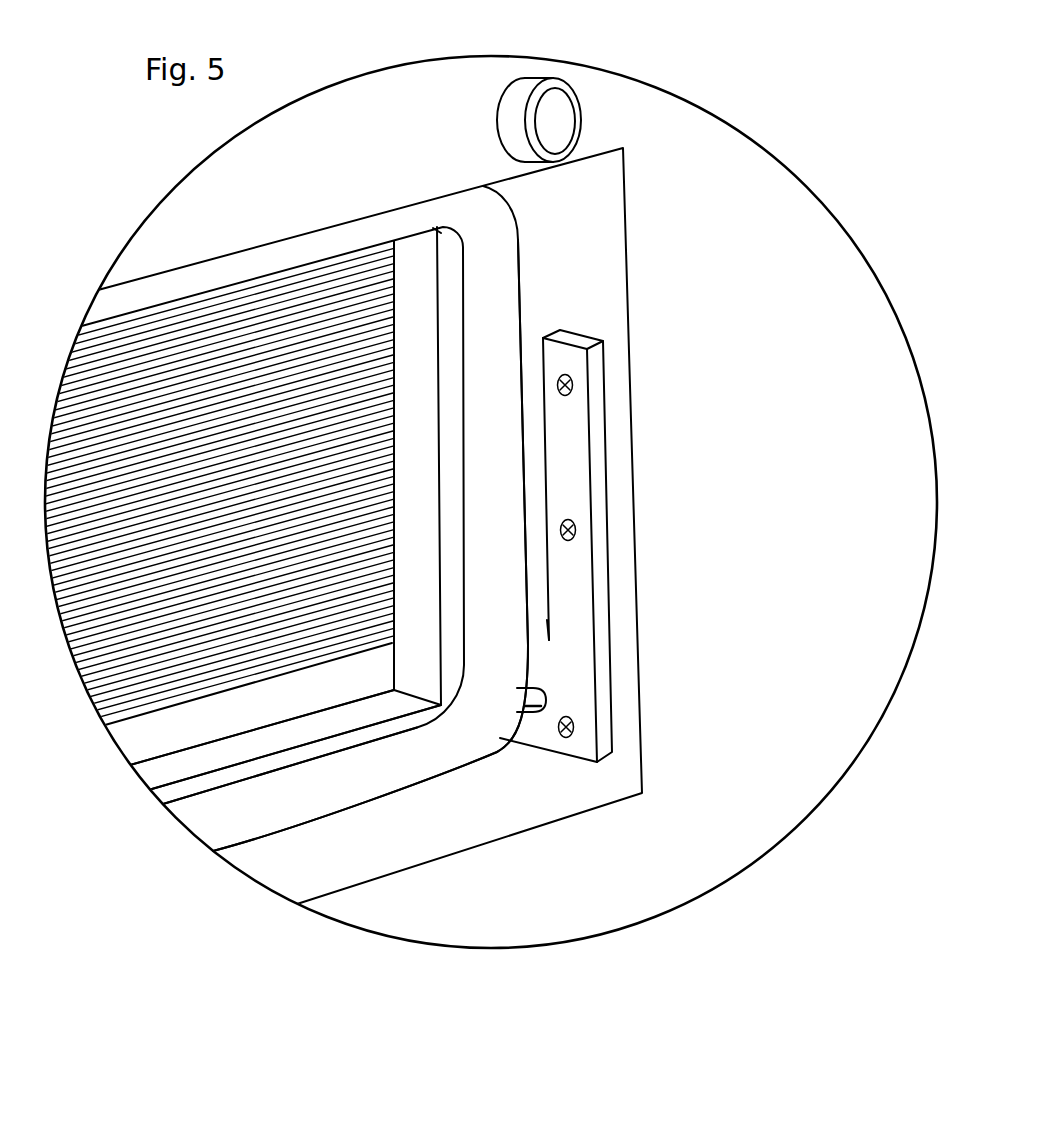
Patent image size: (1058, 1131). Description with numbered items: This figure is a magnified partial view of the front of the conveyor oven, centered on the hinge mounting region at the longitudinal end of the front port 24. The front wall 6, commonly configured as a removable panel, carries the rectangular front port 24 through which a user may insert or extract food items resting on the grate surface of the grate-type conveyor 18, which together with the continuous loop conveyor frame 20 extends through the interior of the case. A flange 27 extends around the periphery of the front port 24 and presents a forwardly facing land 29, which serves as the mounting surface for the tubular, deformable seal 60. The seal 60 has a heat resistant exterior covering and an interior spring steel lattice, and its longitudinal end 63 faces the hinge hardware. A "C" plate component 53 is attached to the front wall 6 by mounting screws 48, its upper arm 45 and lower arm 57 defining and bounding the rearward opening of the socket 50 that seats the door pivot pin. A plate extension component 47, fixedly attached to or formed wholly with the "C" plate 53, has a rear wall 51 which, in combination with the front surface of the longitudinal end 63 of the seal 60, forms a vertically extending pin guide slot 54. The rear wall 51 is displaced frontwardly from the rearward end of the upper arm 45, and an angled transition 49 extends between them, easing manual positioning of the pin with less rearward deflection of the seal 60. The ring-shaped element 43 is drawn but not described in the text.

The front wall 6 is at (700, 793).
The grate-type conveyor 18 is at (205, 562).
The continuous loop conveyor frame 20 is at (195, 722).
The front port 24 is at (483, 818).
The flange 27 is at (415, 315).
The land 29 is at (385, 732).
The grommet 43 is at (553, 112).
The upper arm 45 is at (537, 675).
The plate extension component 47 is at (570, 572).
The mounting screws 48 is at (570, 390).
The angled transition 49 is at (548, 643).
The socket 50 is at (518, 738).
The rear wall 51 is at (543, 437).
The "C" plate component 53 is at (582, 711).
The pin guide slot 54 is at (535, 585).
The lower arm 57 is at (527, 730).
The seal 60 is at (310, 793).
The longitudinal end 63 is at (503, 478).